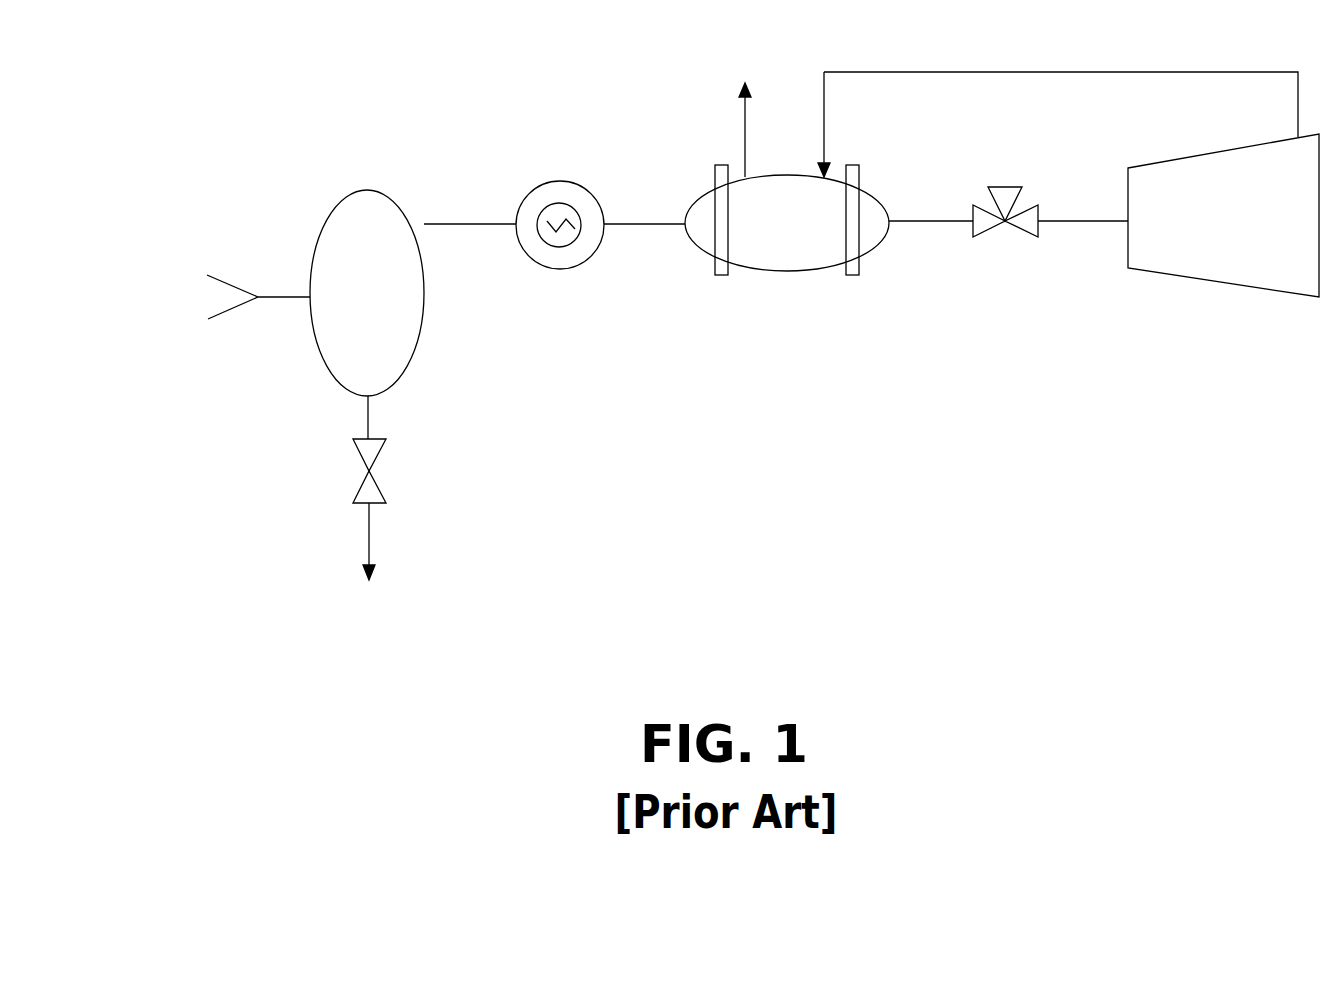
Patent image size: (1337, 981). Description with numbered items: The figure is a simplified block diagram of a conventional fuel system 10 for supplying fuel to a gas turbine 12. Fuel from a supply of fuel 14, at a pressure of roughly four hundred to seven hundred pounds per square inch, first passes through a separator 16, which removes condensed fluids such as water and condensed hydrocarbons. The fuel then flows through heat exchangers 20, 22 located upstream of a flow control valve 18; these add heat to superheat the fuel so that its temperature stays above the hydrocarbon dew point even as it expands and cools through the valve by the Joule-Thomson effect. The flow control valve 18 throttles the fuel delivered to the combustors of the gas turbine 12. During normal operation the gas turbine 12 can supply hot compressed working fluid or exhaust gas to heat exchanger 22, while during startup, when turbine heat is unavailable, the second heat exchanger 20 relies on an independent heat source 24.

The fuel system 10 is at (737, 442).
The gas turbine 12 is at (1197, 282).
The supply of fuel 14 is at (242, 307).
The separator 16 is at (347, 192).
The flow control valve 18 is at (983, 237).
The heat exchanger 20 is at (548, 182).
The heat exchanger 22 is at (793, 272).
The independent heat source 24 is at (520, 247).